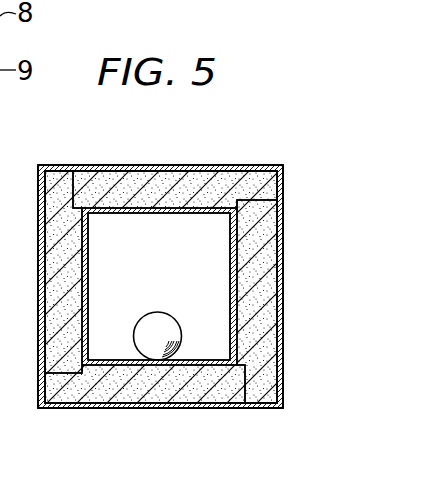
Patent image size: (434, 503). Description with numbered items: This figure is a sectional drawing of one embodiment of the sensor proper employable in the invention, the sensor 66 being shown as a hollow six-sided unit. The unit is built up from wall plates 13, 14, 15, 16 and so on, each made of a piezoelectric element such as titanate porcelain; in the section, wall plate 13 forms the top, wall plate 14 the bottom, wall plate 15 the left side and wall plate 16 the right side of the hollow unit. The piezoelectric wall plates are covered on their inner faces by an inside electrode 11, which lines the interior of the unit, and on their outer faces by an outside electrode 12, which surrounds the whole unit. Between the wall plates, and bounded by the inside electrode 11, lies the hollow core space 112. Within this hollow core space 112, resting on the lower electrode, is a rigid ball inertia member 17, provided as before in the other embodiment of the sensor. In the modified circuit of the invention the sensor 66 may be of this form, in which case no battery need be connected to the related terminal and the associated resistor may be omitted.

The sensor 66 is at (215, 161).
The outside electrode 12 is at (99, 166).
The wall plate 13 is at (162, 176).
The wall plate 14 is at (175, 393).
The wall plate 15 is at (50, 283).
The wall plate 16 is at (267, 308).
The inside electrode 11 is at (90, 253).
The hollow core space 112 is at (110, 330).
The rigid ball inertia member 17 is at (157, 312).